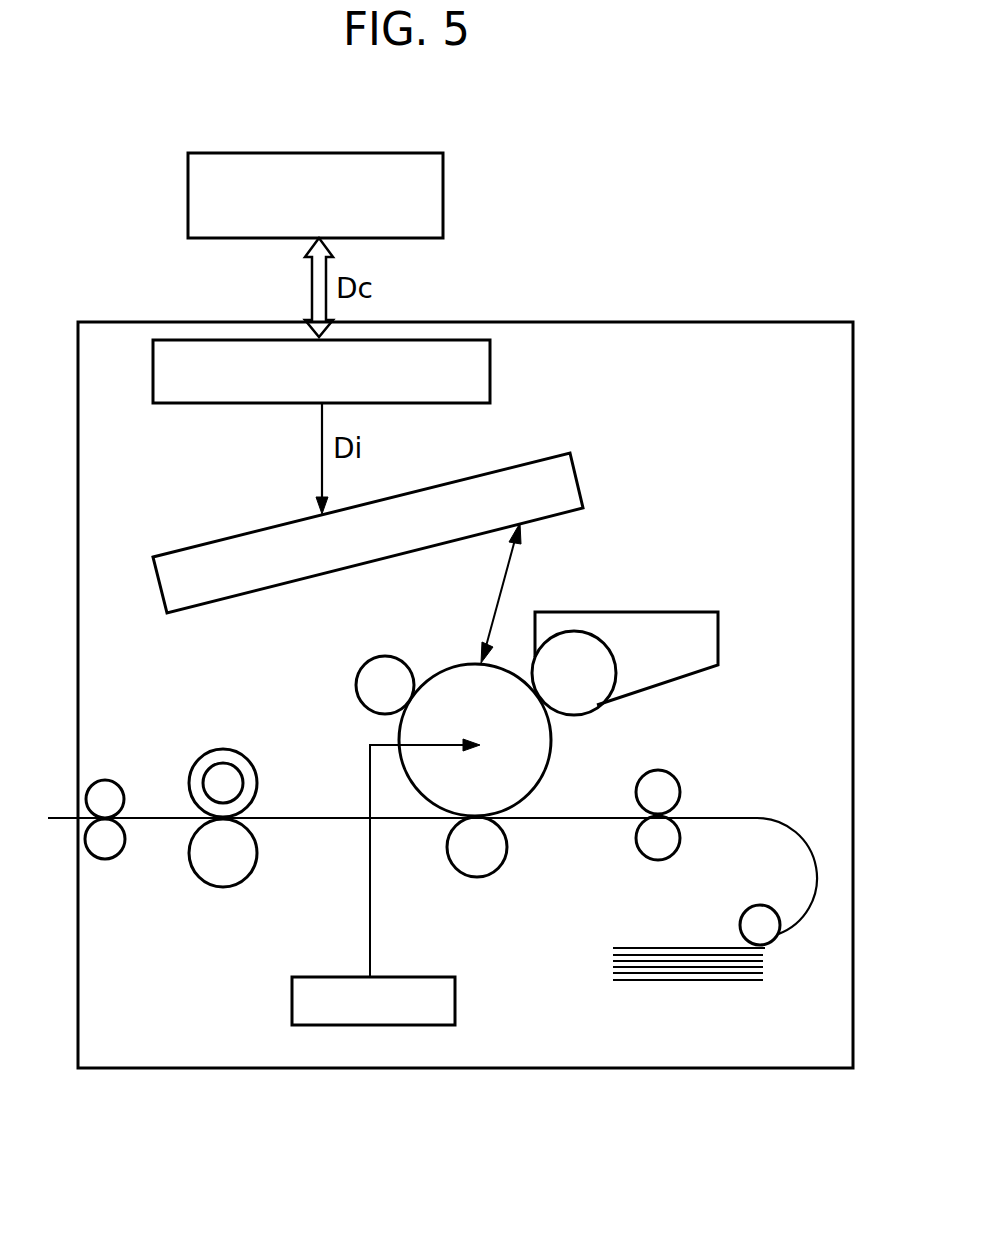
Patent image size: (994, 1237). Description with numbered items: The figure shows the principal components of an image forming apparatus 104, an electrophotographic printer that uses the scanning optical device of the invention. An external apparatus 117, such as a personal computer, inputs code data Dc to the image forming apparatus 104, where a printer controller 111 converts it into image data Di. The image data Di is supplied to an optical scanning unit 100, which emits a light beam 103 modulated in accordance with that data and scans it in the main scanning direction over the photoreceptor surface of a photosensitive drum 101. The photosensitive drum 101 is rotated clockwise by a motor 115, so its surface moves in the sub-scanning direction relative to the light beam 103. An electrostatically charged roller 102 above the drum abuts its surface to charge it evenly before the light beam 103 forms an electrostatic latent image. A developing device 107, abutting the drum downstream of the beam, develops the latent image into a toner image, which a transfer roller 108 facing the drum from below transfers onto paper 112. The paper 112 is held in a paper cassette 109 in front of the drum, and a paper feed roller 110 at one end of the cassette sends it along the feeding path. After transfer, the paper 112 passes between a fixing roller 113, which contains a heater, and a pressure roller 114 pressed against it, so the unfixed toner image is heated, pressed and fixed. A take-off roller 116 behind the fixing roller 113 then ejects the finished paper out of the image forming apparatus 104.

The optical scanning unit 100 is at (583, 470).
The photosensitive drum 101 is at (552, 752).
The electrostatically charged roller 102 is at (357, 678).
The light beam 103 is at (506, 578).
The image forming apparatus 104 is at (697, 322).
The developing device 107 is at (668, 612).
The transfer roller 108 is at (507, 850).
The paper cassette 109 is at (705, 982).
The paper feed roller 110 is at (740, 922).
The printer controller 111 is at (490, 368).
The paper 112 is at (306, 818).
The fixing roller 113 is at (223, 749).
The pressure roller 114 is at (224, 888).
The motor 115 is at (455, 1000).
The take-off roller 116 is at (112, 782).
The external apparatus 117 is at (443, 190).